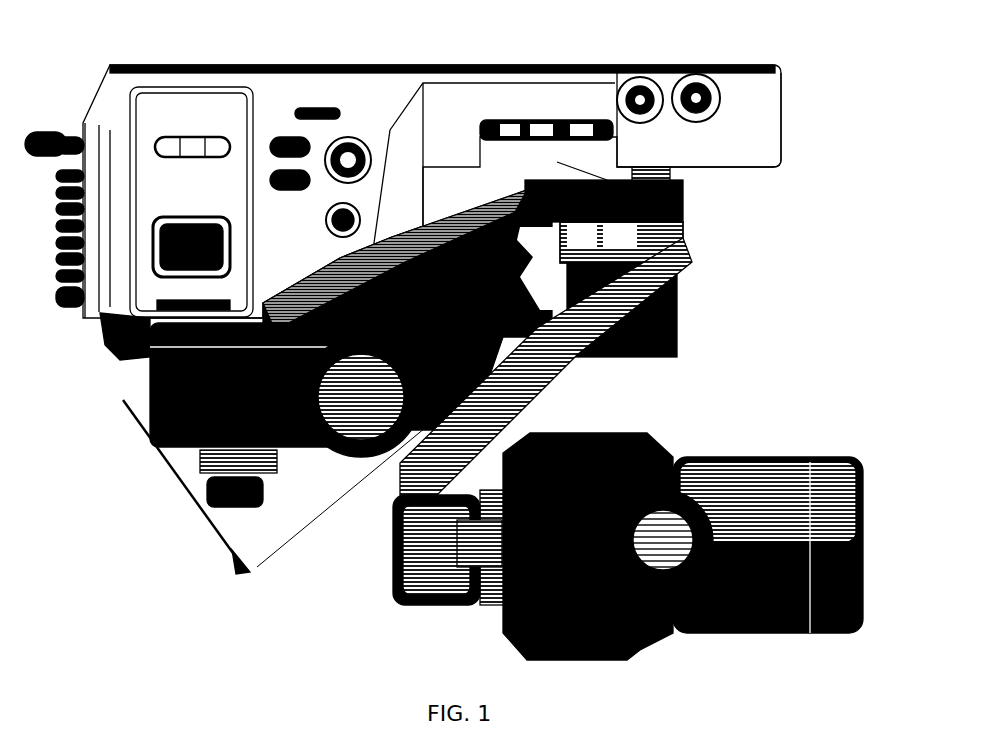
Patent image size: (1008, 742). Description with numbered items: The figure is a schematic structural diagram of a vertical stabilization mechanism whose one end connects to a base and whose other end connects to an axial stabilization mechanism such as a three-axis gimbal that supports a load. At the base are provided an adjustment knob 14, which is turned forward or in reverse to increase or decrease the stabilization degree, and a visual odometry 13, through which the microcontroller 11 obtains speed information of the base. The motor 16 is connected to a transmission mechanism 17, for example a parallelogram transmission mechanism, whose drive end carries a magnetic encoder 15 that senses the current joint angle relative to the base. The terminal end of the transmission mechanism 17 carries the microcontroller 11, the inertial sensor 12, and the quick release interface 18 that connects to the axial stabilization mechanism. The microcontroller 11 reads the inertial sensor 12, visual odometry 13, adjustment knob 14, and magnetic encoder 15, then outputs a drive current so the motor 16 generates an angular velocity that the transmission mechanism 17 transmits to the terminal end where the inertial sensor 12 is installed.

The microcontroller 11 is at (688, 210).
The inertial sensor 12 is at (690, 193).
The visual odometry 13 is at (790, 150).
The adjustment knob 14 is at (467, 191).
The magnetic encoder 15 is at (220, 478).
The motor 16 is at (327, 467).
The transmission mechanism 17 is at (572, 352).
The quick release interface 18 is at (683, 240).